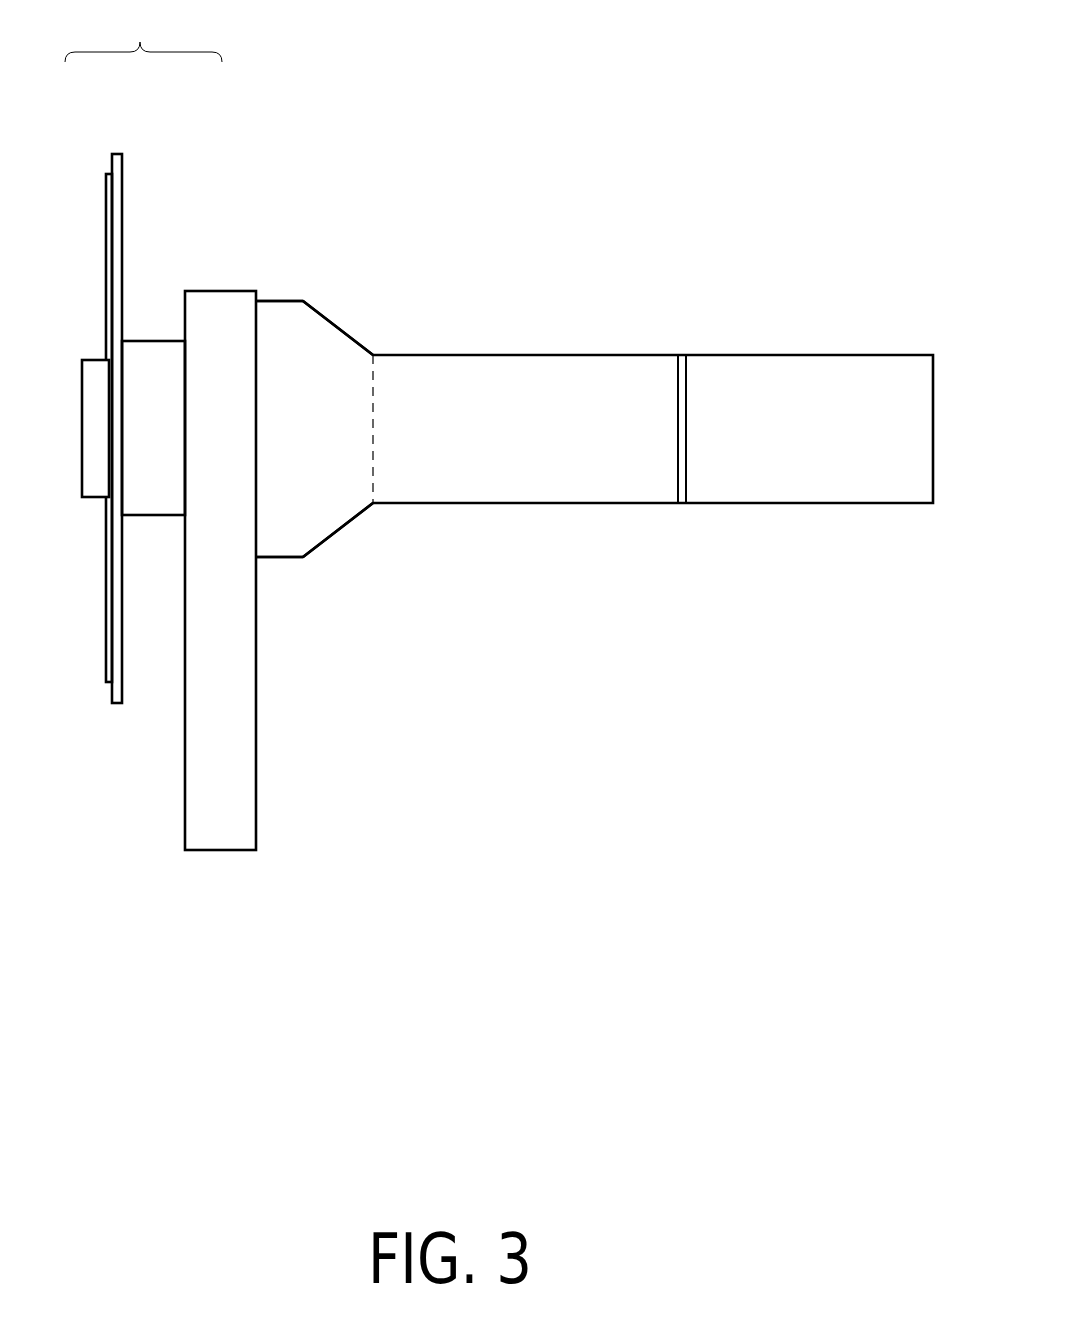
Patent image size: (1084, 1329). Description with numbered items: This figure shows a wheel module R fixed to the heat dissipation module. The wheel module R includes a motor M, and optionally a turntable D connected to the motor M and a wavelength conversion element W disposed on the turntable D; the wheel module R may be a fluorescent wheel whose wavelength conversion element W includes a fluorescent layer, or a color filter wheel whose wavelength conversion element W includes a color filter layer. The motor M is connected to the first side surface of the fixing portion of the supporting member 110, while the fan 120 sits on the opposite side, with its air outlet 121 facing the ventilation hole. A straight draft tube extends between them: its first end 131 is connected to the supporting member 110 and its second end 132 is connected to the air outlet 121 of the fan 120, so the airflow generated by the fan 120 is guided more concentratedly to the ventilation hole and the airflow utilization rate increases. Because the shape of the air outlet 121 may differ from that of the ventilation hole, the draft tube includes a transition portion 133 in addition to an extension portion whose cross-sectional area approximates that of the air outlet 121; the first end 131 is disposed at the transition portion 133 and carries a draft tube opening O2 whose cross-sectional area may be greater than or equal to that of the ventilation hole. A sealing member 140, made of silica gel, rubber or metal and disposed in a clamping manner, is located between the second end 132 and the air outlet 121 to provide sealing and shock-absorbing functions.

The supporting member 110 is at (232, 782).
The fan 120 is at (820, 368).
The air outlet 121 is at (686, 463).
The first end 131 is at (257, 320).
The second end 132 is at (677, 388).
The transition portion 133 is at (328, 342).
The sealing member 140 is at (680, 503).
The draft tube opening O2 is at (256, 479).
The wheel module R is at (143, 31).
The wavelength conversion element W is at (110, 217).
The turntable D is at (118, 185).
The motor M is at (153, 370).